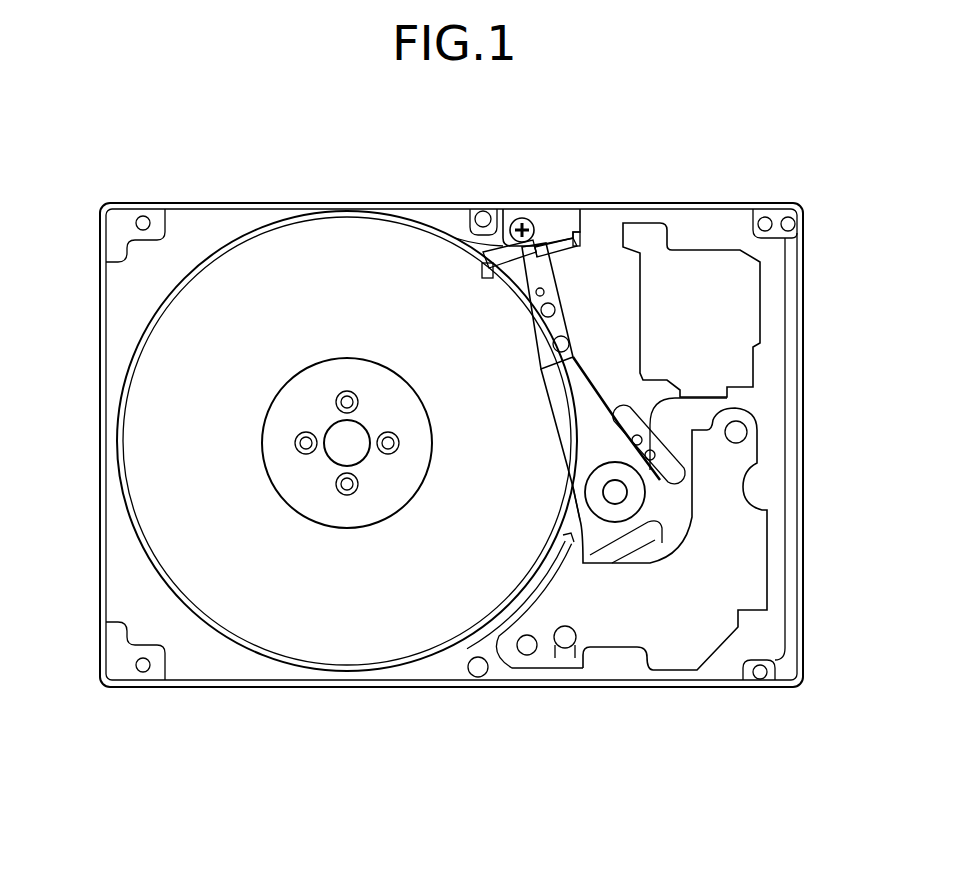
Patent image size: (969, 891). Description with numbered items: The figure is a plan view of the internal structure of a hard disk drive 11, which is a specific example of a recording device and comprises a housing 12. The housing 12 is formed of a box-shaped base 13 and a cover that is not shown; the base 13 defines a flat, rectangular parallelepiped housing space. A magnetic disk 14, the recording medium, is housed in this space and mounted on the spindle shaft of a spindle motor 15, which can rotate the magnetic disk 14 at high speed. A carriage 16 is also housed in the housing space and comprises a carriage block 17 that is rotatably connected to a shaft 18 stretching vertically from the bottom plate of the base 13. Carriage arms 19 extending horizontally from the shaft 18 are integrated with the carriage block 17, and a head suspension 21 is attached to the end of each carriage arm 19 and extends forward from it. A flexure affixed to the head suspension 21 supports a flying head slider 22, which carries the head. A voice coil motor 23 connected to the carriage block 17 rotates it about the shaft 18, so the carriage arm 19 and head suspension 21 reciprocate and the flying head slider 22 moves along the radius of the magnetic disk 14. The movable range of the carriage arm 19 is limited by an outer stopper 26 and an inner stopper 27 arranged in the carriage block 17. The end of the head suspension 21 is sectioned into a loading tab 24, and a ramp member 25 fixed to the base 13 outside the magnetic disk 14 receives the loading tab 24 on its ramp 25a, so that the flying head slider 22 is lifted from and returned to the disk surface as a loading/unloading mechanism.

The hard disk drive 11 is at (100, 160).
The housing 12 is at (445, 193).
The base 13 is at (805, 290).
The magnetic disk 14 is at (140, 338).
The spindle motor 15 is at (328, 436).
The carriage 16 is at (552, 431).
The carriage block 17 is at (564, 504).
The shaft 18 is at (620, 492).
The carriage arm 19 is at (548, 392).
The head suspension 21 is at (545, 283).
The flying head slider 22 is at (528, 270).
The voice coil motor 23 is at (781, 576).
The loading tab 24 is at (470, 252).
The ramp member 25 is at (592, 217).
The ramp 25a is at (487, 273).
The outer stopper 26 is at (567, 650).
The inner stopper 27 is at (757, 500).